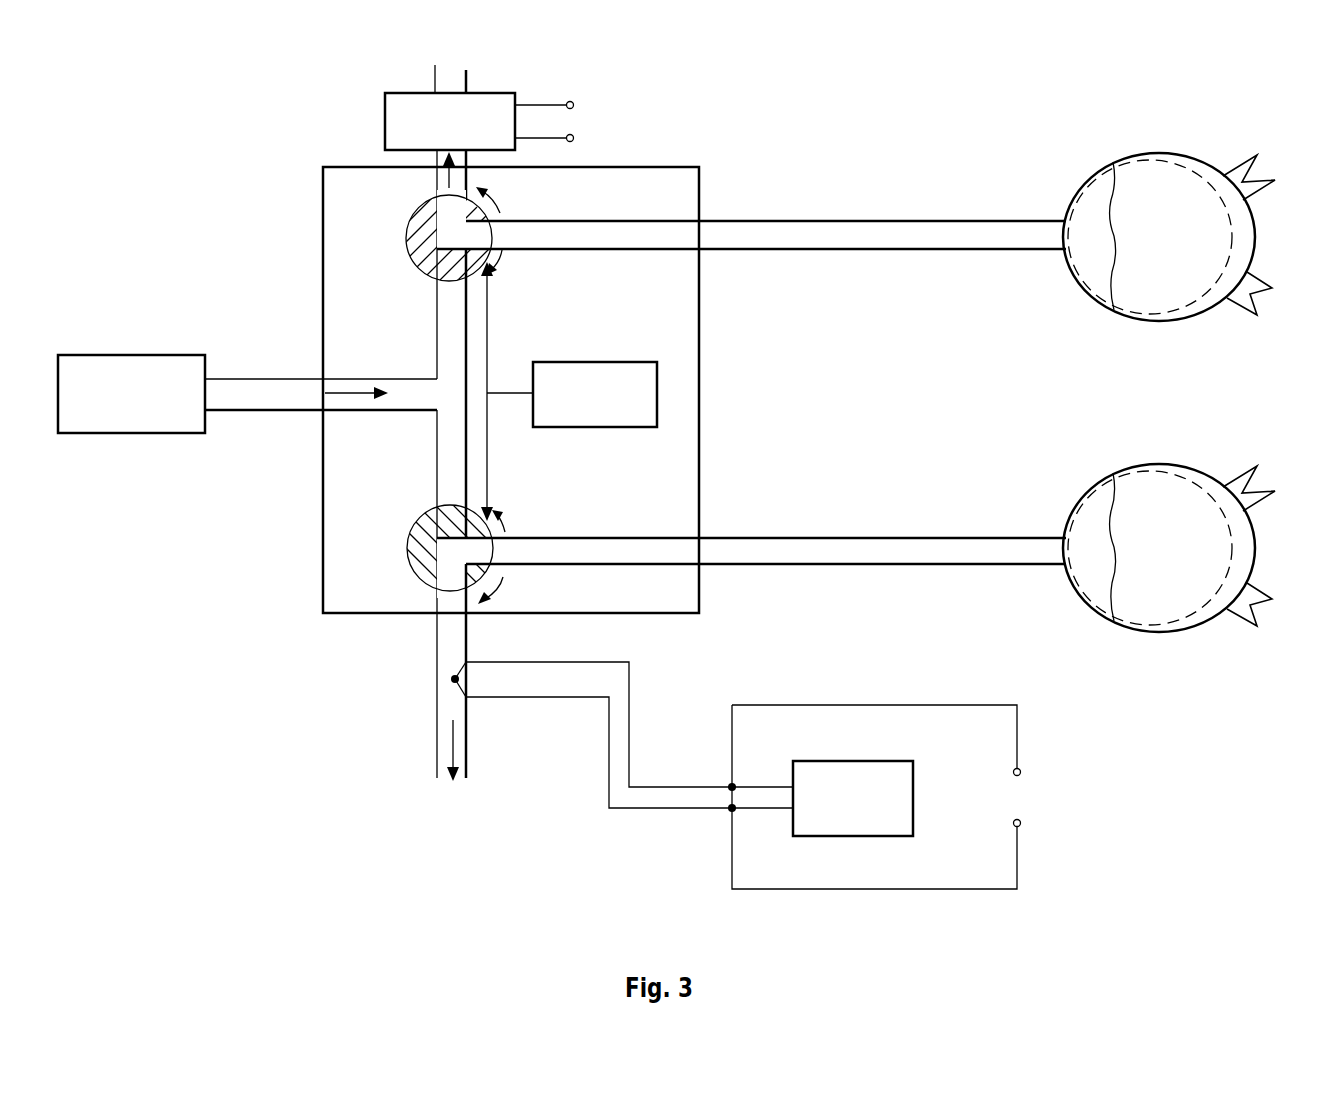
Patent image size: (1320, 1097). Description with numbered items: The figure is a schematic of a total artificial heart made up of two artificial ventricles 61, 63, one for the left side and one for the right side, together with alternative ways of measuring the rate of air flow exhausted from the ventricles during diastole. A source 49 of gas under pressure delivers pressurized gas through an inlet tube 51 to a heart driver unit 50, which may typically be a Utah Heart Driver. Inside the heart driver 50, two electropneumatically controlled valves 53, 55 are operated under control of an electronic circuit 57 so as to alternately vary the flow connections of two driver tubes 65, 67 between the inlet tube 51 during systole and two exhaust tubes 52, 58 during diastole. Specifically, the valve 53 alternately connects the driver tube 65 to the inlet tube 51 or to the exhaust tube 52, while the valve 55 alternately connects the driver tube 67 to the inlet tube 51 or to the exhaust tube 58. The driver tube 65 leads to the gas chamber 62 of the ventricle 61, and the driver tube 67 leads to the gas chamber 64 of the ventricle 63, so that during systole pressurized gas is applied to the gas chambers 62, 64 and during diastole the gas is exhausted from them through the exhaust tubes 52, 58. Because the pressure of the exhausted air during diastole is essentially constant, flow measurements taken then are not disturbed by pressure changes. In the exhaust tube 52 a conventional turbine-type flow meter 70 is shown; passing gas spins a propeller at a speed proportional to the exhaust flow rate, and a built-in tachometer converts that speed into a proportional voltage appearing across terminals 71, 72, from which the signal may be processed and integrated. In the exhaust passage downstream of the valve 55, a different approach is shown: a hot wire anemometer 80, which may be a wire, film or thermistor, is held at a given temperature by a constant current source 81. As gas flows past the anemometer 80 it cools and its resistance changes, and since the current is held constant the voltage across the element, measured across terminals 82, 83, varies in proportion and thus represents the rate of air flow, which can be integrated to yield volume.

The source of gas under pressure 49 is at (140, 355).
The heart driver unit 50 is at (668, 158).
The inlet tube 51 is at (280, 412).
The exhaust tube 52 is at (470, 155).
The electropneumatically controlled valve 53 is at (408, 243).
The electropneumatically controlled valve 55 is at (406, 543).
The electronic circuit 57 is at (580, 428).
The exhaust tube 58 is at (468, 627).
The artificial ventricle 61 is at (1182, 152).
The gas chamber 62 is at (1099, 243).
The artificial ventricle 63 is at (1182, 462).
The gas chamber 64 is at (1101, 554).
The driver tube 65 is at (838, 251).
The driver tube 67 is at (826, 537).
The turbine-type flow meter 70 is at (385, 124).
The terminal 71 is at (573, 101).
The terminal 72 is at (574, 141).
The hot wire anemometer 80 is at (455, 679).
The constant current source 81 is at (880, 760).
The terminal 82 is at (1021, 770).
The terminal 83 is at (1021, 821).